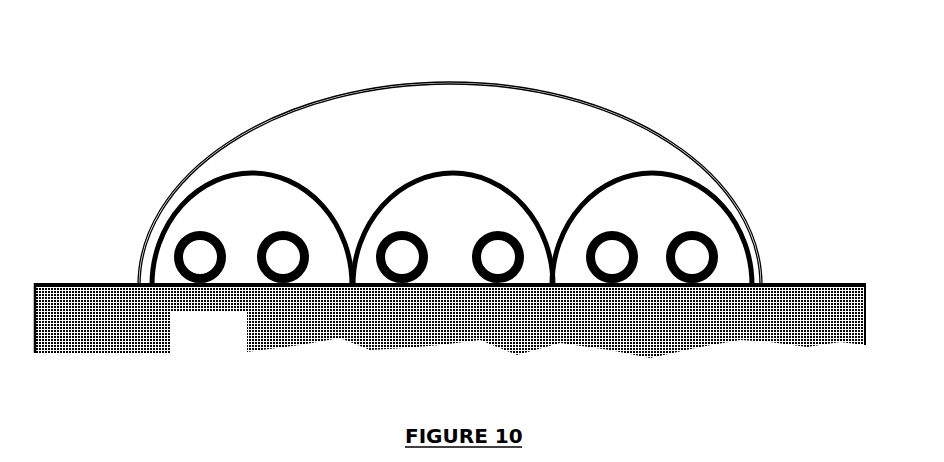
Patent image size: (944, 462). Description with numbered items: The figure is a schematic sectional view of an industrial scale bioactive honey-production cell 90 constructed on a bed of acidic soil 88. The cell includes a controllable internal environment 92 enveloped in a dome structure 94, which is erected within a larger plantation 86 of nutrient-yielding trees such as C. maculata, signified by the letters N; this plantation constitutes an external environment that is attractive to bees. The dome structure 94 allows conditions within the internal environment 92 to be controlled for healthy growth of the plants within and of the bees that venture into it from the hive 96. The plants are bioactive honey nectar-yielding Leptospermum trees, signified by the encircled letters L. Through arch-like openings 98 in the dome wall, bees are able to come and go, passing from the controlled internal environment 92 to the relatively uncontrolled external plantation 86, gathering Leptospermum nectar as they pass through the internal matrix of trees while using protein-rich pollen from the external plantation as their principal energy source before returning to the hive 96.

The bioactive honey-production cell 90 is at (450, 153).
The controllable internal environment 92 is at (492, 126).
The dome structure 94 is at (690, 142).
The hive 96 is at (468, 202).
The arch-like openings 98 is at (390, 187).
The plantation 86 is at (110, 266).
The bed of acidic soil 88 is at (210, 344).